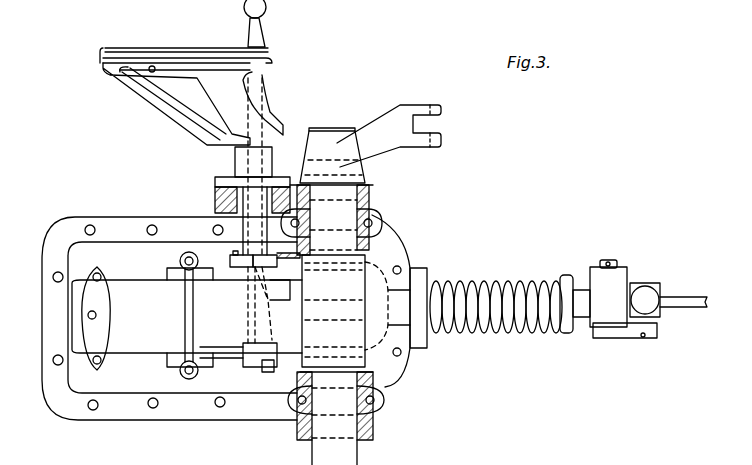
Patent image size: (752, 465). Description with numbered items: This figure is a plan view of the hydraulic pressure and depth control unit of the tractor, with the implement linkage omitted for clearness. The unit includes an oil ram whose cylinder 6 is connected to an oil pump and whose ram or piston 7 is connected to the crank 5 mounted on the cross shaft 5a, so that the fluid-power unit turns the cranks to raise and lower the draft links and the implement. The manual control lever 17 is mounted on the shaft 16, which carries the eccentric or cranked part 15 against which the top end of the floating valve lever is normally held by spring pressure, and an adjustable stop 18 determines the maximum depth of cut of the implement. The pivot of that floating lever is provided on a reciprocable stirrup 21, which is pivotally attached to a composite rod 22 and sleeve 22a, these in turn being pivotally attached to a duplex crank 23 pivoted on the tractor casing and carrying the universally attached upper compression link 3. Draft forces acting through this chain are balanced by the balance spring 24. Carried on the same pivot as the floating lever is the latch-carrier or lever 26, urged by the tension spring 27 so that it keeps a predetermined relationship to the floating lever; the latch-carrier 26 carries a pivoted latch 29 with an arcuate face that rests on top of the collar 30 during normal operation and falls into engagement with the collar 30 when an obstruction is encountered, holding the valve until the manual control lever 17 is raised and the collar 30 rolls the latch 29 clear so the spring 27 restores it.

The upper compression link 3 is at (682, 300).
The crank 5 is at (380, 133).
The cross shaft 5a is at (333, 228).
The cylinder 6 is at (143, 345).
The ram or piston 7 is at (245, 320).
The eccentric or cranked part 15 is at (282, 347).
The shaft 16 is at (267, 153).
The manual control lever 17 is at (258, 31).
The adjustable stop 18 is at (150, 71).
The reciprocable stirrup 21 is at (373, 270).
The composite rod 22 is at (488, 282).
The sleeve 22a is at (580, 297).
The duplex crank 23 is at (607, 328).
The balance spring 24 is at (515, 328).
The latch-carrier or lever 26 is at (227, 255).
The tension spring 27 is at (307, 227).
The pivoted latch 29 is at (230, 262).
The collar 30 is at (263, 265).